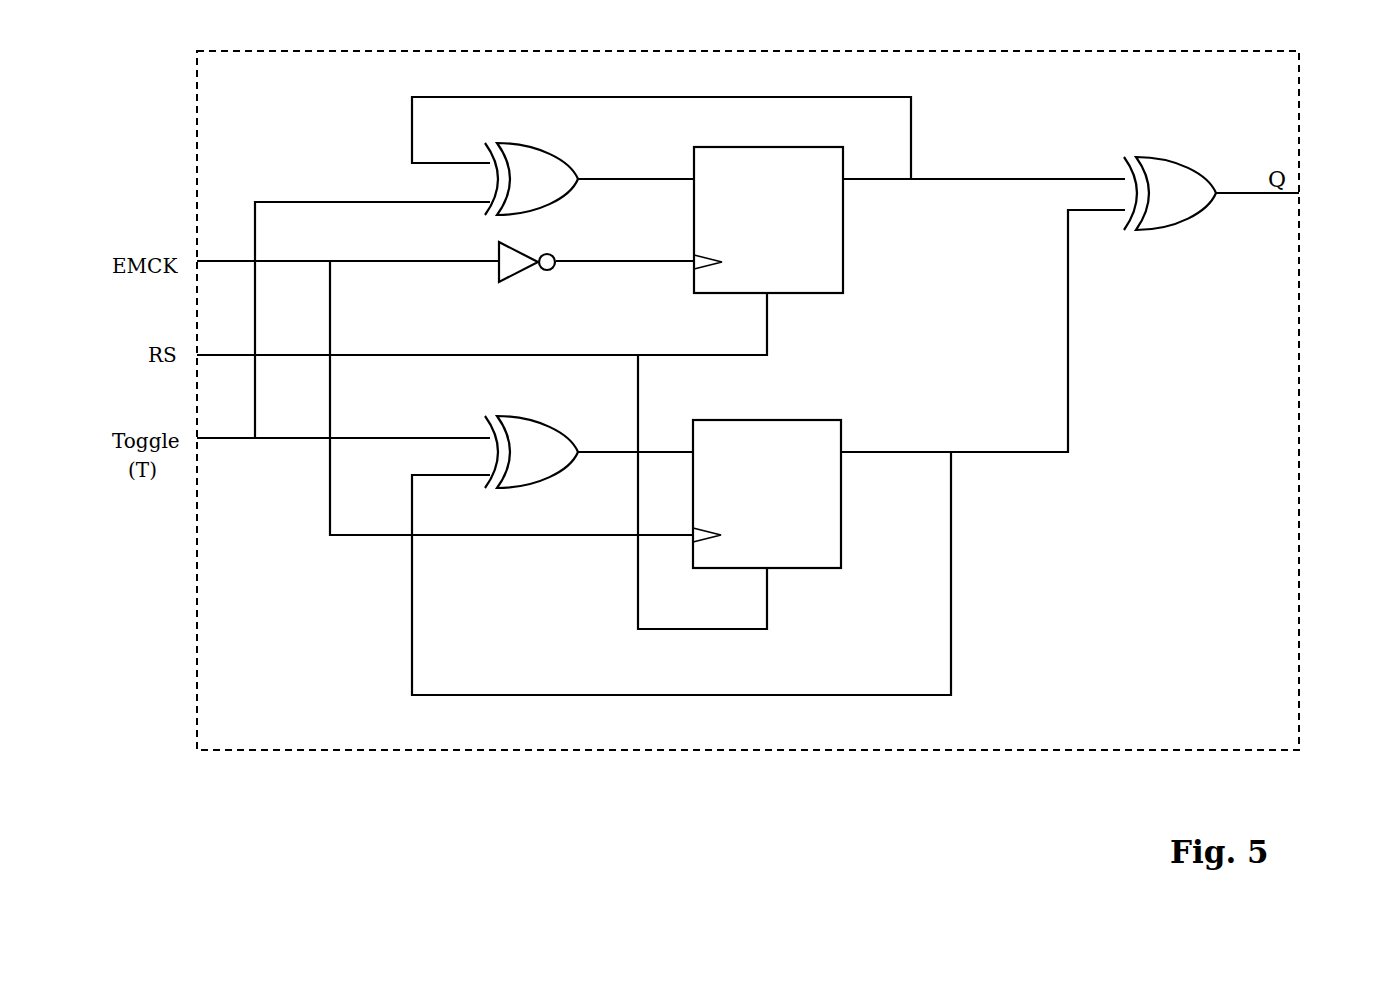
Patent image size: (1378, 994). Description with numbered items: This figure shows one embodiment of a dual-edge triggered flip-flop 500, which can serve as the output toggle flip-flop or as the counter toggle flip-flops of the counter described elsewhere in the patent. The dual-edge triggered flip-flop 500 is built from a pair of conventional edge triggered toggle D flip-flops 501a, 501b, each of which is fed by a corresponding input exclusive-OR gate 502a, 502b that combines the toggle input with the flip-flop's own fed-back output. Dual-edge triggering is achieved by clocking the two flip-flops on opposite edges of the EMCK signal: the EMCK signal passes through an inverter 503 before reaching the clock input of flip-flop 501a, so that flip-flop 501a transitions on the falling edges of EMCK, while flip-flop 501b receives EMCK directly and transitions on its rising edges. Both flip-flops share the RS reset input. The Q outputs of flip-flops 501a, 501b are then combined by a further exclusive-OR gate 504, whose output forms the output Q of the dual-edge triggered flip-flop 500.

The dual-edge triggered flip-flop 500 is at (1312, 415).
The edge triggered toggle D flip-flop 501a is at (784, 223).
The edge triggered toggle D flip-flop 501b is at (782, 506).
The input exclusive-OR gate 502a is at (562, 152).
The input exclusive-OR gate 502b is at (542, 419).
The inverter 503 is at (524, 283).
The exclusive-OR gate 504 is at (1178, 232).